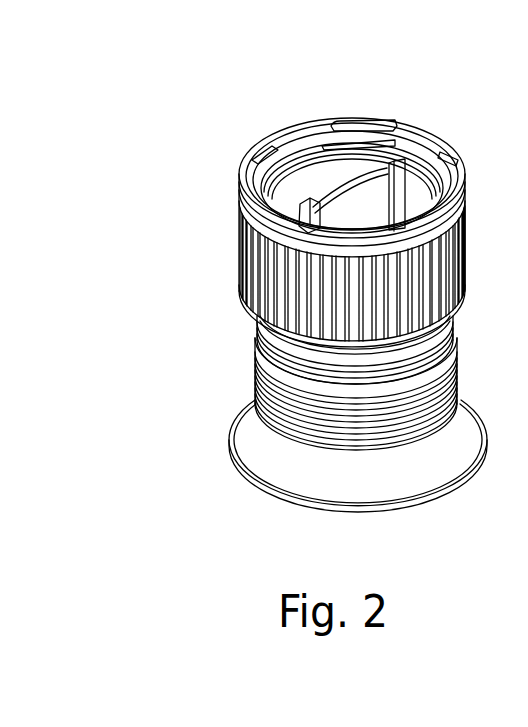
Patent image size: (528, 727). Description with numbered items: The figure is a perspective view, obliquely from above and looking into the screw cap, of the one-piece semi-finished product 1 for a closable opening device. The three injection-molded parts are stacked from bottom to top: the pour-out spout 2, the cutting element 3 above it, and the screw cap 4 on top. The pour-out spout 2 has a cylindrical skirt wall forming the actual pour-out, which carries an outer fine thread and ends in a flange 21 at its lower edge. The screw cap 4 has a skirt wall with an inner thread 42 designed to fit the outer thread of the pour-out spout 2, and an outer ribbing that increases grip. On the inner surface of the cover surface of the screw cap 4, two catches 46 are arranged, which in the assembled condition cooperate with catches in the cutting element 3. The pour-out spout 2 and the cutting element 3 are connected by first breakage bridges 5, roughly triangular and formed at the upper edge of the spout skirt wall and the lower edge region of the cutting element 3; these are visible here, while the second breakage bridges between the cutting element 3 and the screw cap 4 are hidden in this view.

The semi-finished product 1 is at (222, 207).
The pour-out spout 2 is at (460, 397).
The flange 21 is at (287, 493).
The cutting element 3 is at (433, 323).
The screw cap 4 is at (443, 250).
The first breakage bridges 5 is at (447, 352).
The inner thread 42 is at (345, 185).
The catches 46 is at (311, 200).